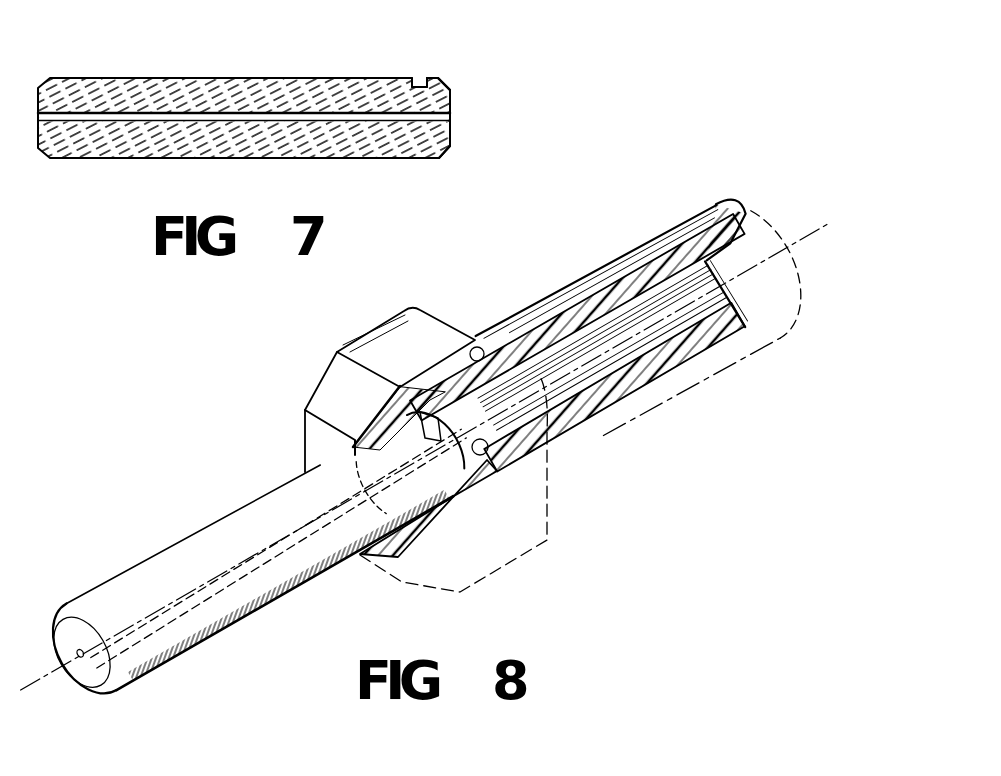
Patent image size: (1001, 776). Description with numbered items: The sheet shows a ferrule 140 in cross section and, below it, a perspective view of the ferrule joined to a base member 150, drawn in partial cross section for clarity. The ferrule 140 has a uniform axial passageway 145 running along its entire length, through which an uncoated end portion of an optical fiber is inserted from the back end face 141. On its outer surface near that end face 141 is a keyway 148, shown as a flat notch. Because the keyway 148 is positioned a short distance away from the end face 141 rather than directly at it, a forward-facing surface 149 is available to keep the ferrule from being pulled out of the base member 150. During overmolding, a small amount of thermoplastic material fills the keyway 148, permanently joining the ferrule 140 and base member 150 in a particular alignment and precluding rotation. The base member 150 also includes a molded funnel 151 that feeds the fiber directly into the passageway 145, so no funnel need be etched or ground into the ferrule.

In FIG. 7, the ferrule 140 is at (147, 68).
In FIG. 8, the ferrule 140 is at (247, 492).
In FIG. 7, the back end face 141 is at (452, 118).
In FIG. 7, the axial passageway 145 is at (150, 117).
In FIG. 8, the axial passageway 145 is at (263, 557).
In FIG. 7, the keyway 148 is at (418, 75).
In FIG. 8, the keyway 148 is at (400, 414).
In FIG. 7, the forward-facing surface 149 is at (428, 75).
In FIG. 8, the base member 150 is at (637, 238).
In FIG. 8, the molded funnel 151 is at (488, 452).